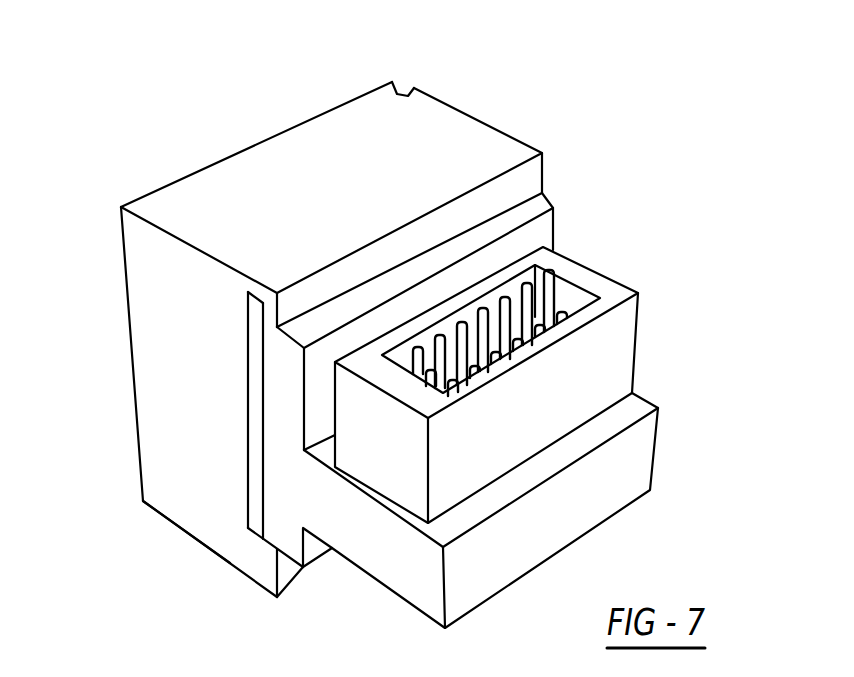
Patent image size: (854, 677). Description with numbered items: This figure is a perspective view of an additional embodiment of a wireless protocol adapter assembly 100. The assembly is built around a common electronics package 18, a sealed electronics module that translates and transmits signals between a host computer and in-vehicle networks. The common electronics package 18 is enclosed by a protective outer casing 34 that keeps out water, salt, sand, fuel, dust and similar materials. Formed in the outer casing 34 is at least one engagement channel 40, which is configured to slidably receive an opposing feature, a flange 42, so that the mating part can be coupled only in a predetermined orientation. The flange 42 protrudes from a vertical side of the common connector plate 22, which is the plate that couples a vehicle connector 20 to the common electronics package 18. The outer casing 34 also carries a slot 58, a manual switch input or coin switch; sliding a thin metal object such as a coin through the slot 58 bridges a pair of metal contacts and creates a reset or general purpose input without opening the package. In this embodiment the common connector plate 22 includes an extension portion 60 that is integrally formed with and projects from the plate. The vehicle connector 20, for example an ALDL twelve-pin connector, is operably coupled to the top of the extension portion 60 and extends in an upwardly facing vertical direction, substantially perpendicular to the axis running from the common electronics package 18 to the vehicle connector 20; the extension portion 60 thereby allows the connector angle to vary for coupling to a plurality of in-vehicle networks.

The wireless protocol adapter assembly 100 is at (504, 88).
The common electronics package 18 is at (208, 552).
The vehicle connector 20 is at (635, 347).
The common connector plate 22 is at (547, 222).
The outer casing 34 is at (157, 513).
The engagement channel 40 is at (247, 298).
The flange 42 is at (223, 552).
The slot 58 is at (410, 94).
The extension portion 60 is at (657, 448).